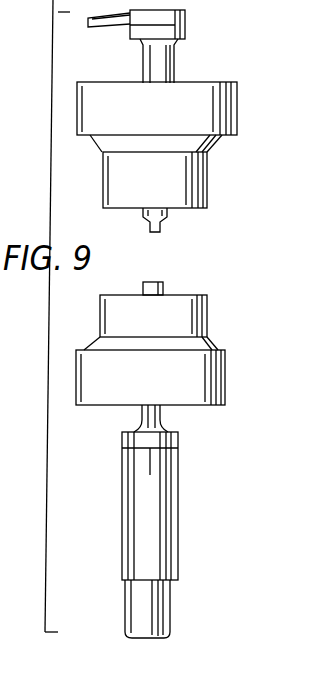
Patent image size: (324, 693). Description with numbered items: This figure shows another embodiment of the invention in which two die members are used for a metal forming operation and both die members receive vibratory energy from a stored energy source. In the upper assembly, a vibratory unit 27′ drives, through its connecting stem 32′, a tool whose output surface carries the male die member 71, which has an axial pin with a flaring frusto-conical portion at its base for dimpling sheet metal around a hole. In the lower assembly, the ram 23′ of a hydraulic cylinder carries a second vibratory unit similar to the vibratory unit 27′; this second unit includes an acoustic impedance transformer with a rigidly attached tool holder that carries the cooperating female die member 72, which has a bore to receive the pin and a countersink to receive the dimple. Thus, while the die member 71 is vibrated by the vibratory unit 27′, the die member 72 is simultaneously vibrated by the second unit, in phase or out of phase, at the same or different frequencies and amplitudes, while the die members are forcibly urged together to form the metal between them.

The vibratory unit 27′ is at (192, 32).
The stem 32′ is at (170, 70).
The male die member 71 is at (165, 212).
The female die member 72 is at (163, 289).
The ram 23′ is at (172, 620).